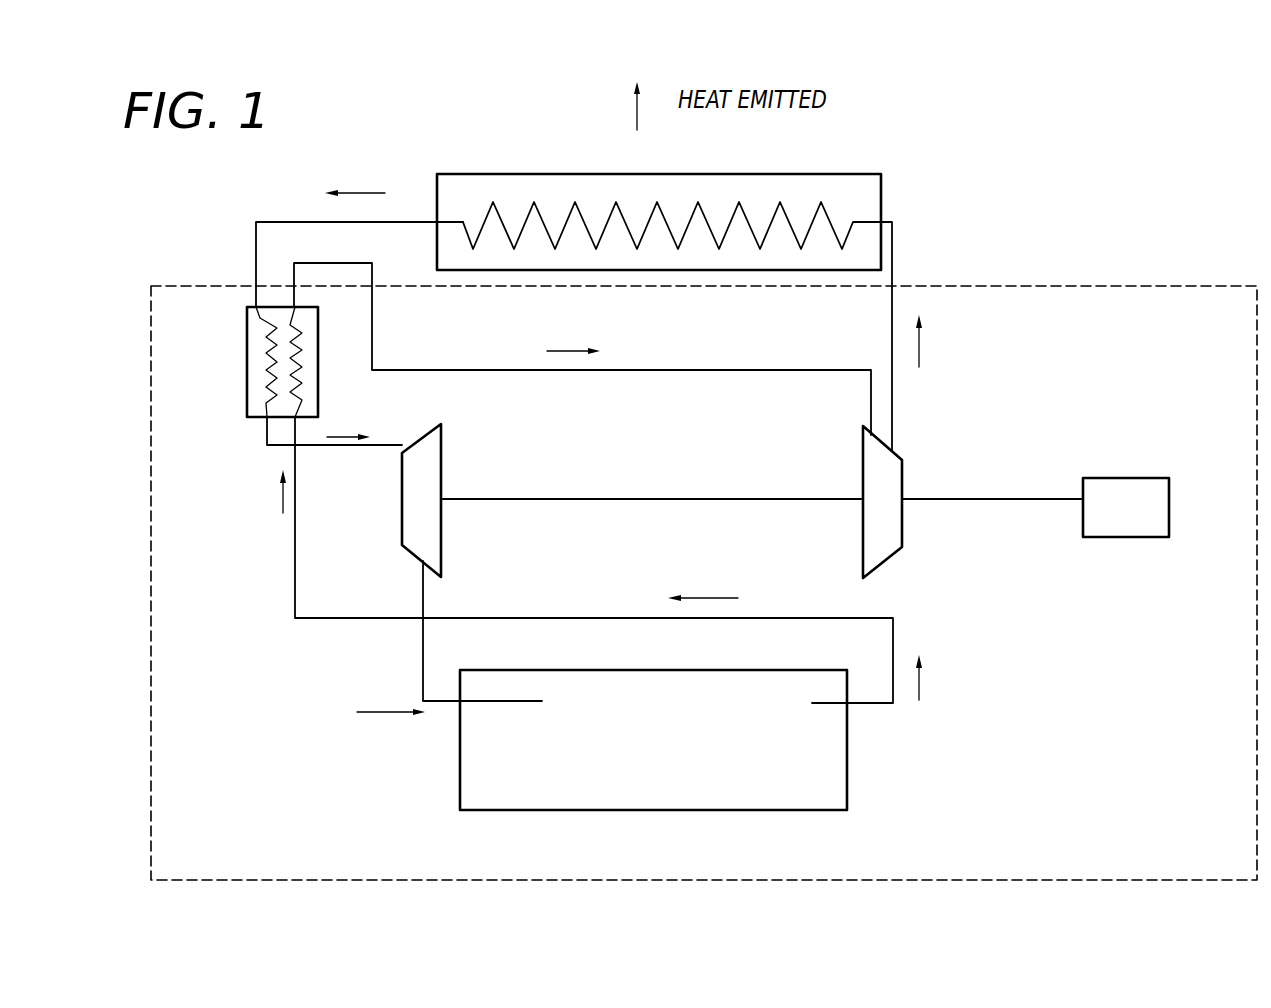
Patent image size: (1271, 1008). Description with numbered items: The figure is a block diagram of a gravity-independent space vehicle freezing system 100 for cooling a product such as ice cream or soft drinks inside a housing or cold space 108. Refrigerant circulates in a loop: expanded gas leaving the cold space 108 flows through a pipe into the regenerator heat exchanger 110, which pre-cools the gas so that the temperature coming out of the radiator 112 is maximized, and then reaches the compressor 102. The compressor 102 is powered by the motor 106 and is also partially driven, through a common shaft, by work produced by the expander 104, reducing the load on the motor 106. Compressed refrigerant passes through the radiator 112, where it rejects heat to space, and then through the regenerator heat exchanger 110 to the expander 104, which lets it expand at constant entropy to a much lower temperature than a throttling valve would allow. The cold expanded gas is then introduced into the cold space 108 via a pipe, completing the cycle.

The space vehicle freezing system 100 is at (1050, 287).
The compressor 102 is at (908, 473).
The expander 104 is at (443, 453).
The motor 106 is at (1120, 478).
The cold space 108 is at (698, 757).
The regenerator heat exchanger 110 is at (248, 352).
The radiator 112 is at (853, 175).